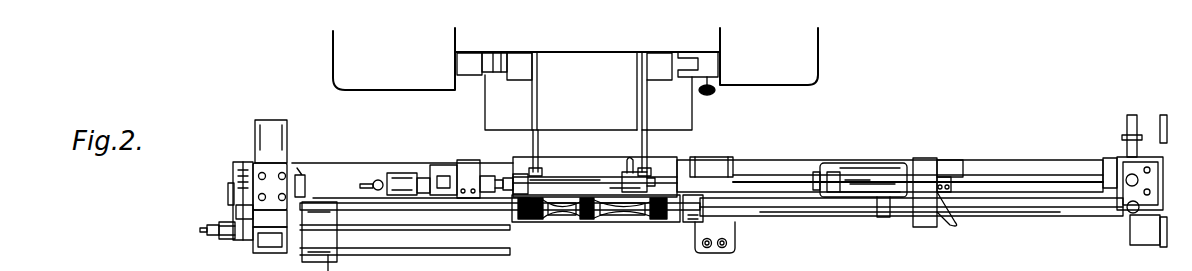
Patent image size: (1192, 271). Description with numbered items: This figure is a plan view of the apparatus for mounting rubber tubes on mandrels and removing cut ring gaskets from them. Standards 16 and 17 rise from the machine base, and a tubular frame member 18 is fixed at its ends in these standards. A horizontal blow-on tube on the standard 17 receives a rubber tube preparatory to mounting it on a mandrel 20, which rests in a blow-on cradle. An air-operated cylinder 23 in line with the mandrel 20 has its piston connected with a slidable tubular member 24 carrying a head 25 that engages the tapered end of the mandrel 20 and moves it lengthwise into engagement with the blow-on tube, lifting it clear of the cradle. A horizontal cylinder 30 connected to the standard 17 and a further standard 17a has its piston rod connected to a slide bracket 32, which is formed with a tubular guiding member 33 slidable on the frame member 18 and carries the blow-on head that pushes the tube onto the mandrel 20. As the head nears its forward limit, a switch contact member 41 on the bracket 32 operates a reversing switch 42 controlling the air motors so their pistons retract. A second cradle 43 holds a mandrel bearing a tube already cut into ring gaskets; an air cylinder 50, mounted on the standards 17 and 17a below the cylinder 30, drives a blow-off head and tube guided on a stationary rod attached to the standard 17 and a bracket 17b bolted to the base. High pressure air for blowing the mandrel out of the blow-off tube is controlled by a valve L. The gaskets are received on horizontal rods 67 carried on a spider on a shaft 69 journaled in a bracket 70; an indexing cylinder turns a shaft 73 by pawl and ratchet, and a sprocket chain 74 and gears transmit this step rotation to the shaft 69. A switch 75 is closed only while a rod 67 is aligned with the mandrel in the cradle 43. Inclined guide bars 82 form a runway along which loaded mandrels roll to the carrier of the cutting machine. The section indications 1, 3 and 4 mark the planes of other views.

The guide bars 82 is at (532, 112).
The bracket 70 is at (270, 186).
The shaft 73 is at (228, 190).
The sprocket chain 74 is at (232, 210).
The shaft 69 is at (210, 230).
The switch 75 is at (307, 190).
The horizontal rods 67 is at (505, 253).
The air-operated cylinder 23 is at (403, 177).
The standard 16 is at (465, 163).
The tubular member 24 is at (493, 182).
The head 25 is at (515, 182).
The mandrel 20 is at (580, 182).
The reversing switch 42 is at (620, 173).
The second cradle 43 is at (555, 222).
The tube 1 is at (593, 220).
The bracket section 3 is at (670, 264).
The bracket 17b is at (717, 167).
The tubular frame member 18 is at (762, 180).
The air cylinder 50 is at (1103, 207).
The switch contact member 41 is at (813, 177).
The slide bracket 32 is at (890, 165).
The tubular guiding member 33 is at (845, 180).
The standard 17 is at (930, 217).
The section line 4 is at (788, 264).
The horizontal cylinder 30 is at (1048, 175).
The standard 17a is at (1130, 165).
The high pressure air valve L is at (1127, 130).